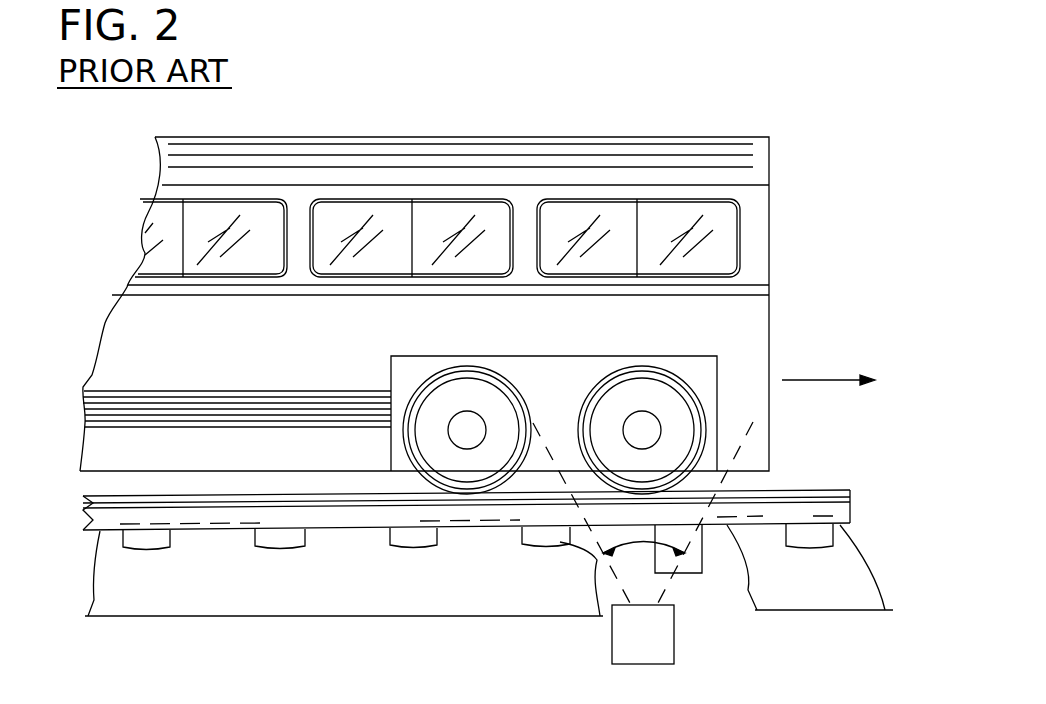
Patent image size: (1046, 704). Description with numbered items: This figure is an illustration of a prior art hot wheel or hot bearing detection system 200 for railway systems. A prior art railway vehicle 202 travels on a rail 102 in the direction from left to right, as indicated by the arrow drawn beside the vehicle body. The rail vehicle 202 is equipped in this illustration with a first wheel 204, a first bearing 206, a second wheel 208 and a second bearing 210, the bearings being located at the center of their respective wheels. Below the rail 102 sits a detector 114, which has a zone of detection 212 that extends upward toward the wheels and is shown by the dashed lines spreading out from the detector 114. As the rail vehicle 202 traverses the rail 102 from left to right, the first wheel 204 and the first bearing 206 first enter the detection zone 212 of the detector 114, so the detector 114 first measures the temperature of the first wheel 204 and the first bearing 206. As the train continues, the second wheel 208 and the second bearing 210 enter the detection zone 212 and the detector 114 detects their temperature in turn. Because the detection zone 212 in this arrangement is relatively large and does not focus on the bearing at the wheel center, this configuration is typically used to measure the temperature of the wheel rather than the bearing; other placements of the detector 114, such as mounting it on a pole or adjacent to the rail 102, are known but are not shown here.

The prior art train system 200 is at (457, 73).
The railway vehicle 202 is at (770, 196).
The first wheel 204 is at (660, 367).
The first bearing 206 is at (660, 424).
The second wheel 208 is at (470, 367).
The second bearing 210 is at (487, 430).
The rail 102 is at (850, 500).
The detection zone 212 is at (643, 545).
The detector 114 is at (675, 634).